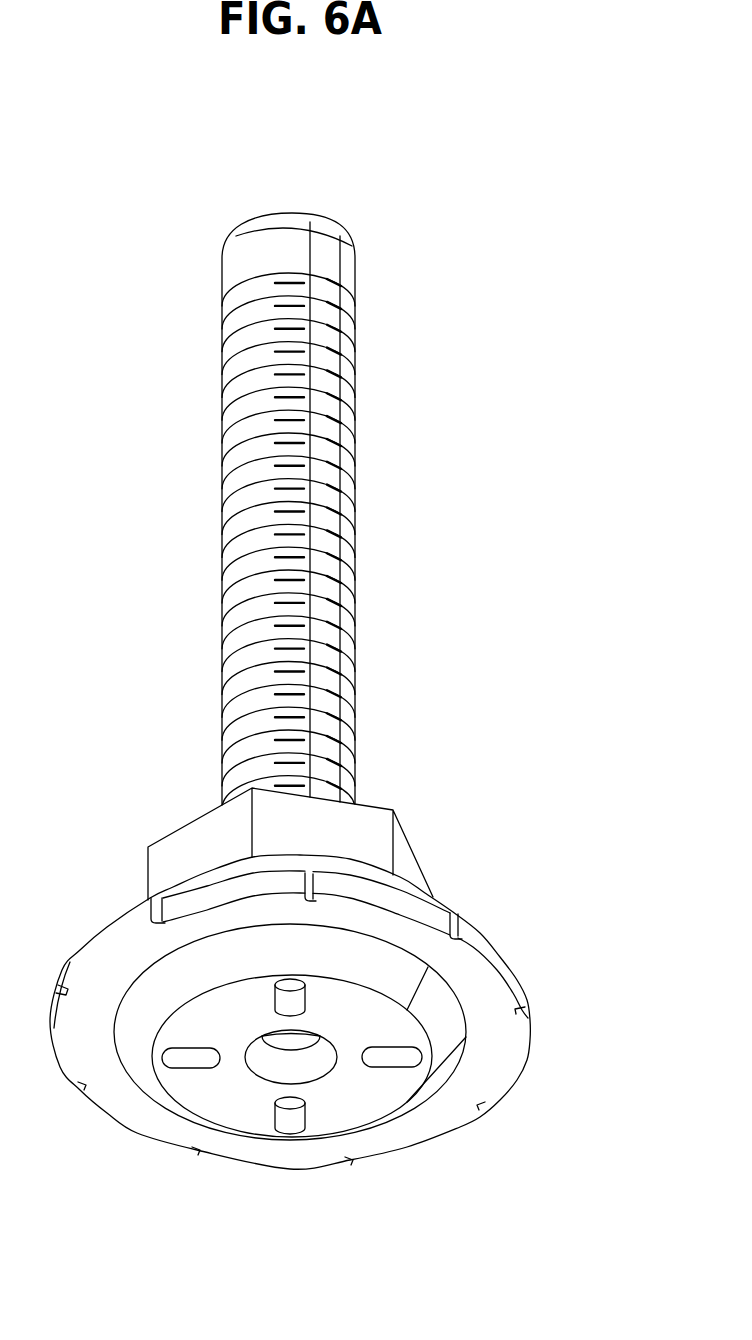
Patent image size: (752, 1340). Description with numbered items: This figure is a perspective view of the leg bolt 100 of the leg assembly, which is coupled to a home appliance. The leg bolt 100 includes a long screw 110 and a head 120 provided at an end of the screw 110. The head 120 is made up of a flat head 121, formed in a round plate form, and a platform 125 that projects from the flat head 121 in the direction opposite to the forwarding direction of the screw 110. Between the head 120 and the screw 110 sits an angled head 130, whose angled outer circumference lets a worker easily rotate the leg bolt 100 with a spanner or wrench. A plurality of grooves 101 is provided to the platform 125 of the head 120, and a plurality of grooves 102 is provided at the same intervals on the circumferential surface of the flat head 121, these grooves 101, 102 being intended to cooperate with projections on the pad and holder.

The leg bolt 100 is at (424, 596).
The screw 110 is at (236, 549).
The angled head 130 is at (168, 852).
The head 120 is at (324, 1083).
The flat head 121 is at (127, 1105).
The platform 125 is at (223, 1105).
The grooves 101 is at (293, 1123).
The grooves 102 is at (468, 919).